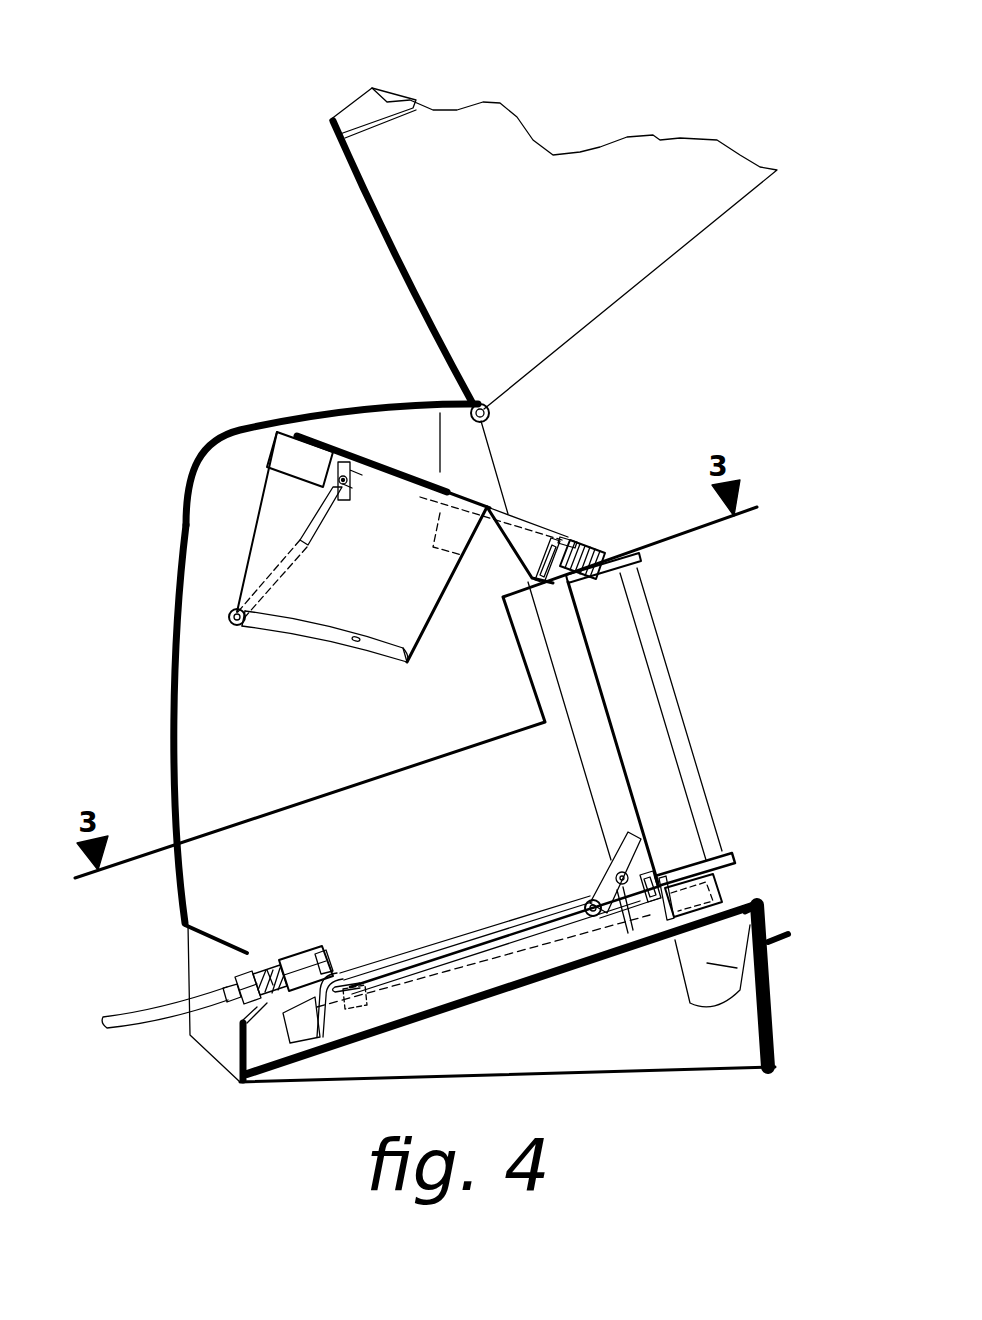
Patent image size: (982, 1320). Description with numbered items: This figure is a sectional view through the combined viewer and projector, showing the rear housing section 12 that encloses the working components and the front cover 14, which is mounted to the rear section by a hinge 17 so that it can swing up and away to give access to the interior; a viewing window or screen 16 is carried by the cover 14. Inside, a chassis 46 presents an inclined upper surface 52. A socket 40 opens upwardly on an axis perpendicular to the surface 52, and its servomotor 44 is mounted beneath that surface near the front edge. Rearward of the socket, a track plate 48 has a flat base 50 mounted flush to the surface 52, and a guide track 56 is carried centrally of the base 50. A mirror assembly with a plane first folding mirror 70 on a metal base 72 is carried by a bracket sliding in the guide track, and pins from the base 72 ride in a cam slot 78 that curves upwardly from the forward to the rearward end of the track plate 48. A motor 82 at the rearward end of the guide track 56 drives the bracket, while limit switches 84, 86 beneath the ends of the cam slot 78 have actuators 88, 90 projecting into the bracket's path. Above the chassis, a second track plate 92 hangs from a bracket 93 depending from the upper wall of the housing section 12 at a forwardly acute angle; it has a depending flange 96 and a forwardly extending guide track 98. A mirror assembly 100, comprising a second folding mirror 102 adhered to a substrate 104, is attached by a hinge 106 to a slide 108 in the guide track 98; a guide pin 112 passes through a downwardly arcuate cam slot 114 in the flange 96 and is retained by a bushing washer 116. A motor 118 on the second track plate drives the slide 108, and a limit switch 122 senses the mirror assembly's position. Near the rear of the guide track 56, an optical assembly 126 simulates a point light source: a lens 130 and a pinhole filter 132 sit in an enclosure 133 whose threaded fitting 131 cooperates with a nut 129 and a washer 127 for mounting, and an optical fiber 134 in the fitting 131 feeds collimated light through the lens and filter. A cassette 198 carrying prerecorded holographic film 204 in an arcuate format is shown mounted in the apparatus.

The rear housing section 12 is at (218, 435).
The front section or cover 14 is at (633, 253).
The viewing window or screen 16 is at (383, 108).
The hinge 17 is at (492, 410).
The socket 40 is at (723, 883).
The servomotor 44 is at (752, 922).
The chassis 46 is at (787, 918).
The track plate 48 is at (487, 933).
The base 50 is at (487, 980).
The inclined upper surface 52 is at (567, 965).
The guide track 56 is at (653, 917).
The first folding mirror 70 is at (605, 878).
The metal base 72 is at (628, 835).
The cam slot 78 is at (407, 970).
The motor 82 is at (305, 1025).
The limit switch 84 is at (343, 973).
The limit switch 86 is at (650, 873).
The switch actuator 88 is at (347, 970).
The switch actuator 90 is at (660, 882).
The second track plate 92 is at (407, 664).
The bracket 93 is at (398, 432).
The flange 96 is at (415, 617).
The guide track 98 is at (530, 530).
The mirror assembly 100 is at (297, 528).
The second folding mirror 102 is at (317, 540).
The substrate or base 104 is at (307, 520).
The hinge 106 is at (347, 488).
The slide 108 is at (355, 495).
The guide pin 112 is at (232, 627).
The cam slot 114 is at (365, 645).
The bushing washer 116 is at (250, 627).
The motor 118 is at (283, 453).
The limit switch 122 is at (507, 552).
The optical assembly 126 is at (585, 545).
The washer 127 is at (250, 972).
The nut 129 is at (250, 993).
The lens 130 is at (280, 968).
The externally threaded fitting 131 is at (233, 983).
The pinhole filter 132 is at (287, 967).
The enclosure 133 is at (317, 953).
The optical fiber 134 is at (132, 1017).
The cassette 198 is at (700, 675).
The holographic film 204 is at (690, 772).